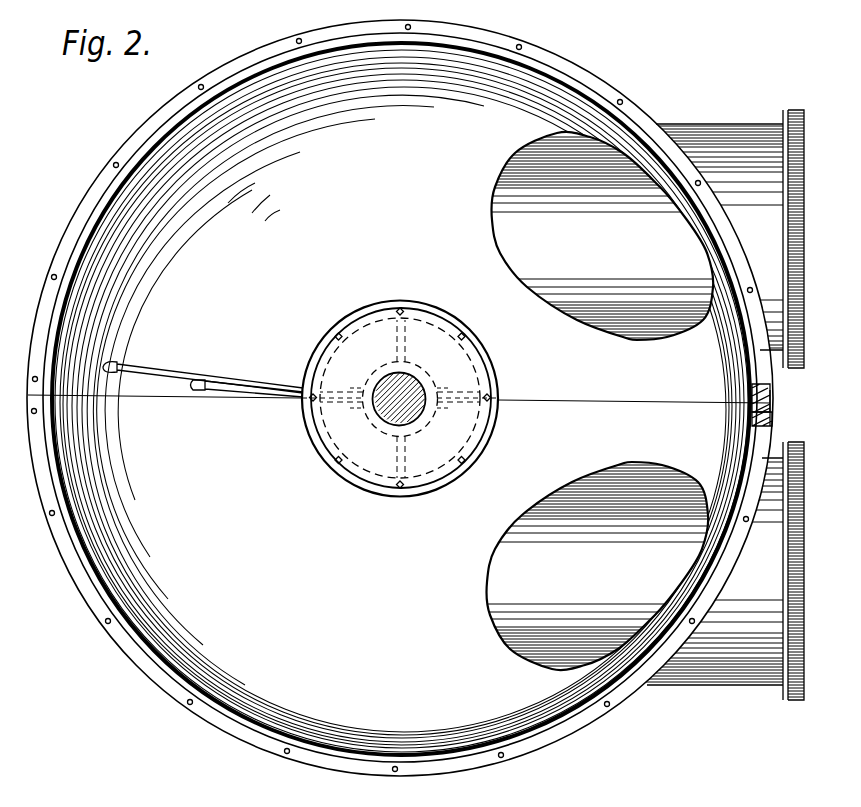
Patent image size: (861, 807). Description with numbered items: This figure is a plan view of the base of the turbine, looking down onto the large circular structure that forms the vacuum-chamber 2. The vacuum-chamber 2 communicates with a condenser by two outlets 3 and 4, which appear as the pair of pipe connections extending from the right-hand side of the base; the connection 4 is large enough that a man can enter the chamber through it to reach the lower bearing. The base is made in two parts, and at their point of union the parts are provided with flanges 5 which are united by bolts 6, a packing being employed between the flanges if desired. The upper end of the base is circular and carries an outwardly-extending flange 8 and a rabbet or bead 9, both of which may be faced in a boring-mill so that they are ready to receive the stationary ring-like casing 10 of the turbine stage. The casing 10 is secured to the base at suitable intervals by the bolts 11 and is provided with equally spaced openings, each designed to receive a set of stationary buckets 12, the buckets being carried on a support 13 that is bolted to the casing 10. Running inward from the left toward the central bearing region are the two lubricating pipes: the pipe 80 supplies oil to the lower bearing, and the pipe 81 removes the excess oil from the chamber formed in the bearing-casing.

The vacuum-chamber 2 is at (401, 401).
The outlet 3 is at (725, 571).
The outlet 4 is at (730, 239).
The flanges 5 is at (771, 403).
The bolts 6 is at (773, 428).
The outwardly-extending flange 8 is at (591, 717).
The rabbet or bead 9 is at (518, 738).
The casing 10 is at (356, 390).
The bolts 11 is at (446, 411).
The stationary buckets 12 is at (356, 411).
The support 13 is at (443, 390).
The pipe 80 is at (240, 392).
The pipe 81 is at (198, 375).